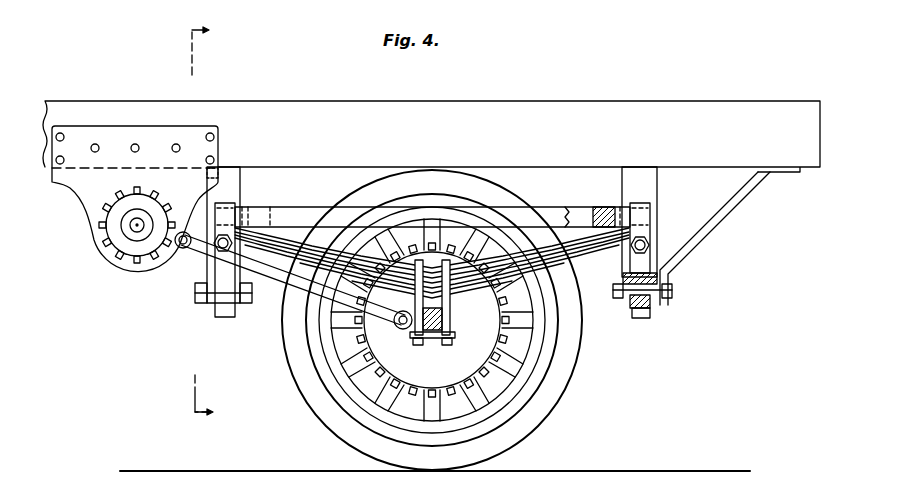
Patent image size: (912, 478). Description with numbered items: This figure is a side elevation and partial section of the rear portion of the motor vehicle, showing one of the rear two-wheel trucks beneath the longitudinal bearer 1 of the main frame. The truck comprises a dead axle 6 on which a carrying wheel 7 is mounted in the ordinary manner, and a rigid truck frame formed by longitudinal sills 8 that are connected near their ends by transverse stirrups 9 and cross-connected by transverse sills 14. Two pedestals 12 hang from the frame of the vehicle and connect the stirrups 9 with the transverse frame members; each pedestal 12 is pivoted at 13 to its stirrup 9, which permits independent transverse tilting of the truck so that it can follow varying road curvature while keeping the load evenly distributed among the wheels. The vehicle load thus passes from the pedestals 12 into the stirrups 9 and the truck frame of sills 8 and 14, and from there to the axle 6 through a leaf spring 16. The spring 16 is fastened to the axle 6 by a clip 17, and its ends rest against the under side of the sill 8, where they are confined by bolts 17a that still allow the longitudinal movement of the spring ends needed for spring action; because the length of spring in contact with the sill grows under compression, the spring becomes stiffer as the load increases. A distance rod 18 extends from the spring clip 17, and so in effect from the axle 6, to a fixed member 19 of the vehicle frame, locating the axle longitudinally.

The longitudinal bearer 1 is at (542, 110).
The axle 6 is at (437, 332).
The carrying wheel 7 is at (310, 348).
The longitudinal sill 8 is at (513, 218).
The transverse stirrup 9 is at (223, 313).
The pedestal 12 is at (238, 182).
The pivot 13 is at (220, 295).
The transverse sill 14 is at (262, 217).
The rear truck spring 16 is at (285, 238).
The spring clip 17 is at (447, 322).
The bolt 17a is at (213, 252).
The distance rod 18 is at (280, 283).
The fixed member 19 is at (90, 190).